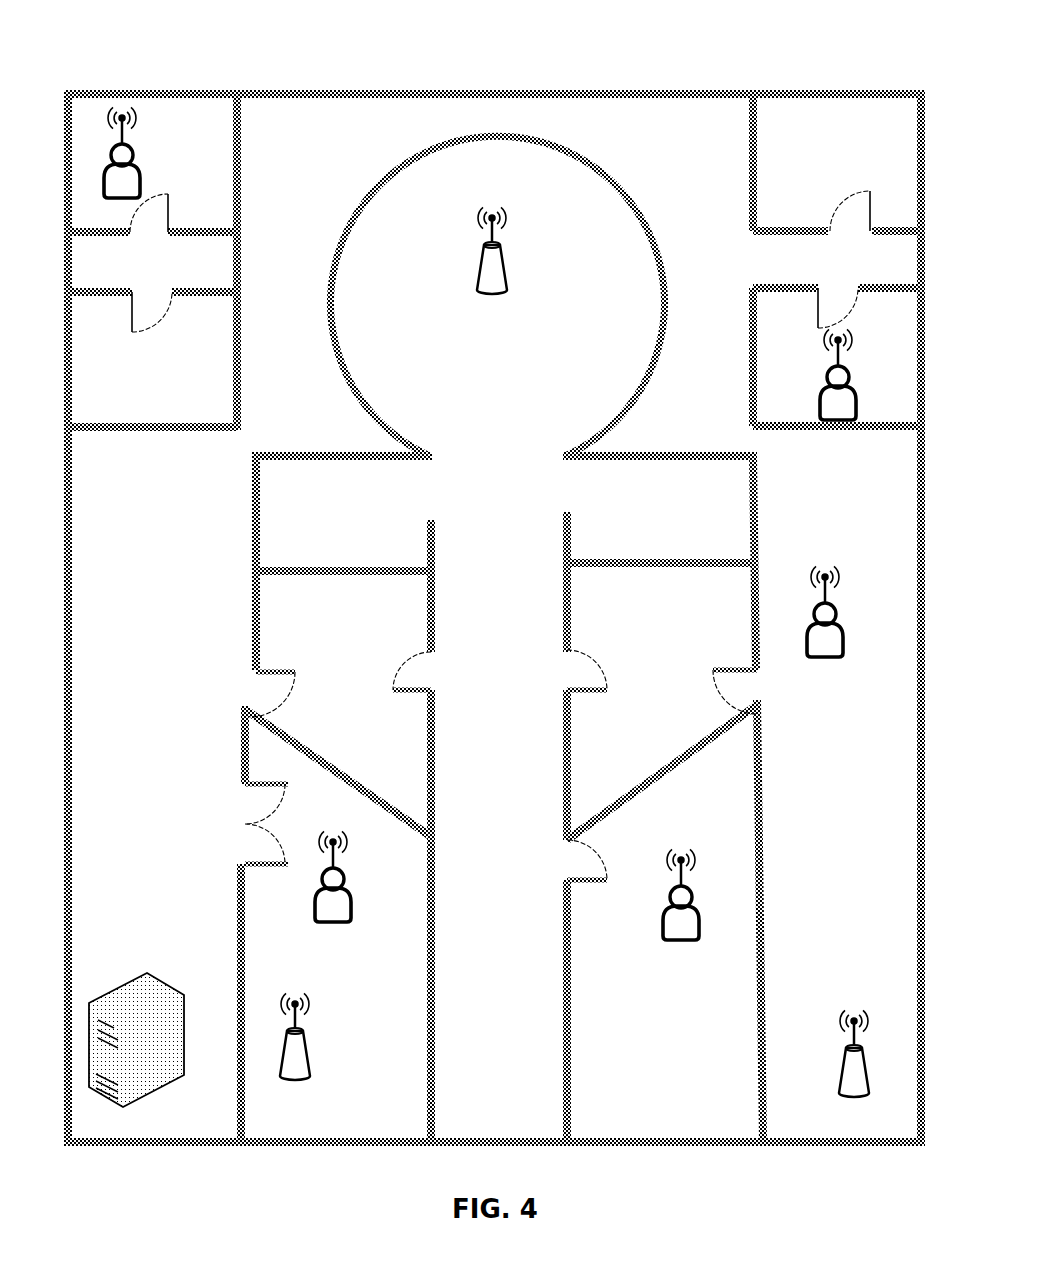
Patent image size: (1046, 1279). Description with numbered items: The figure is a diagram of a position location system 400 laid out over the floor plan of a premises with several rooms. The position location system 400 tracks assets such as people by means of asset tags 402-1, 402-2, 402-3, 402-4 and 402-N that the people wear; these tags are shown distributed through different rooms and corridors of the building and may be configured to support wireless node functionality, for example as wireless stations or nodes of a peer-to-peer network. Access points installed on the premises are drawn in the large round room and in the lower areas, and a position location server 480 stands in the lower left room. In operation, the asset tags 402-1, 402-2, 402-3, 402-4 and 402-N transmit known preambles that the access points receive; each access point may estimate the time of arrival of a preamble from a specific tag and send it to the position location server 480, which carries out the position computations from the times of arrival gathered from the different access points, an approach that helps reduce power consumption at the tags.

The position location system 400 is at (567, 50).
The asset tag 402-1 is at (141, 172).
The asset tag 402-2 is at (853, 391).
The asset tag 402-3 is at (843, 628).
The asset tag 402-4 is at (697, 914).
The asset tag 402-N is at (350, 882).
The position location server 480 is at (165, 985).